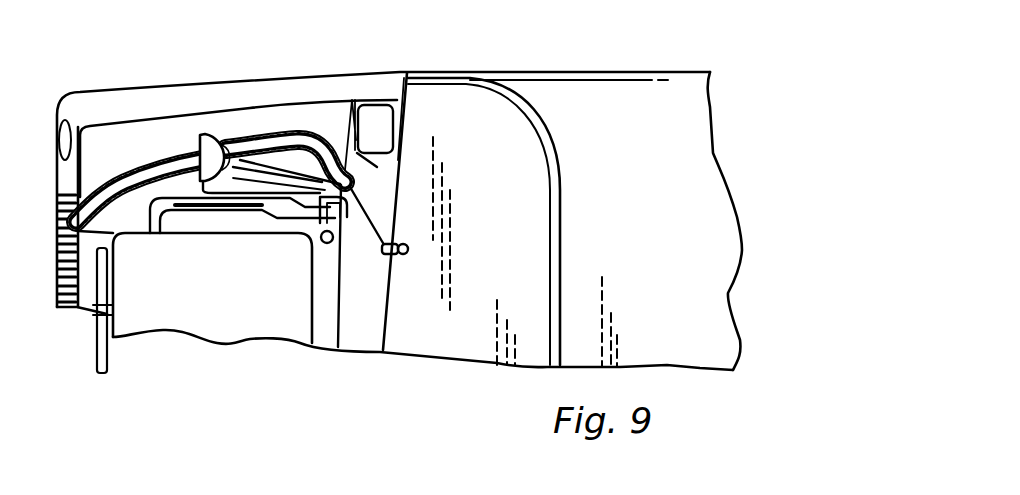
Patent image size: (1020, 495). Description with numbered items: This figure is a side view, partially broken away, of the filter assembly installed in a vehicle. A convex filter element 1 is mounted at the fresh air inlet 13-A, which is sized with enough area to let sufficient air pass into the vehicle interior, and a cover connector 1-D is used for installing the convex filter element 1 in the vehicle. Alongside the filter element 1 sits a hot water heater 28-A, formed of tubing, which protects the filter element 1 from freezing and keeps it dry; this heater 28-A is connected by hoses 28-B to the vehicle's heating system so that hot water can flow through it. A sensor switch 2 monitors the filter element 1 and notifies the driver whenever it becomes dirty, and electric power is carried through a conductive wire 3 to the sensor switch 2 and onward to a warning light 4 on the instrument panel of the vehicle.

The filter element 1 is at (203, 133).
The sensor switch 2 is at (243, 130).
The conductive wire 3 is at (353, 190).
The warning light 4 is at (387, 250).
The fresh air inlet 13-A is at (348, 185).
The cover connector 1-D is at (373, 103).
The hot water heater 28-A is at (197, 180).
The hoses 28-B is at (278, 220).